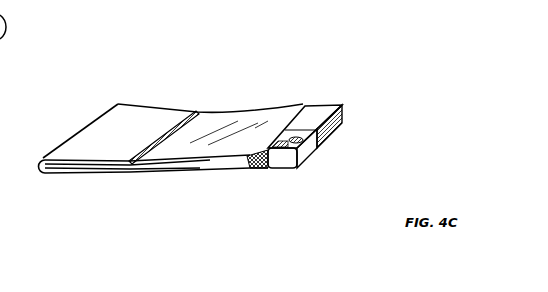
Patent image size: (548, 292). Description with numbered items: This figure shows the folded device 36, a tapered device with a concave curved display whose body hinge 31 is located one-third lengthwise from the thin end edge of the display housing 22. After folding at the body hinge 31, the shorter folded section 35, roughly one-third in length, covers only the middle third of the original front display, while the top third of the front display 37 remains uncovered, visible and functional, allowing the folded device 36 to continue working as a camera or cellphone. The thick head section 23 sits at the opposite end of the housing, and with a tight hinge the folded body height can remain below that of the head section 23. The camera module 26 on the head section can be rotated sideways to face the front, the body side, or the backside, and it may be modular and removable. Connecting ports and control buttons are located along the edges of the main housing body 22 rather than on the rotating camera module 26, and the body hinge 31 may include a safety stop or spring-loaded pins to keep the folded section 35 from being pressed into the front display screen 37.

The display housing 22 is at (213, 170).
The head section 23 is at (327, 102).
The camera module 26 is at (310, 150).
The body hinge 31 is at (38, 172).
The folded section 35 is at (137, 112).
The folded device 36 is at (214, 32).
The front display 37 is at (304, 103).